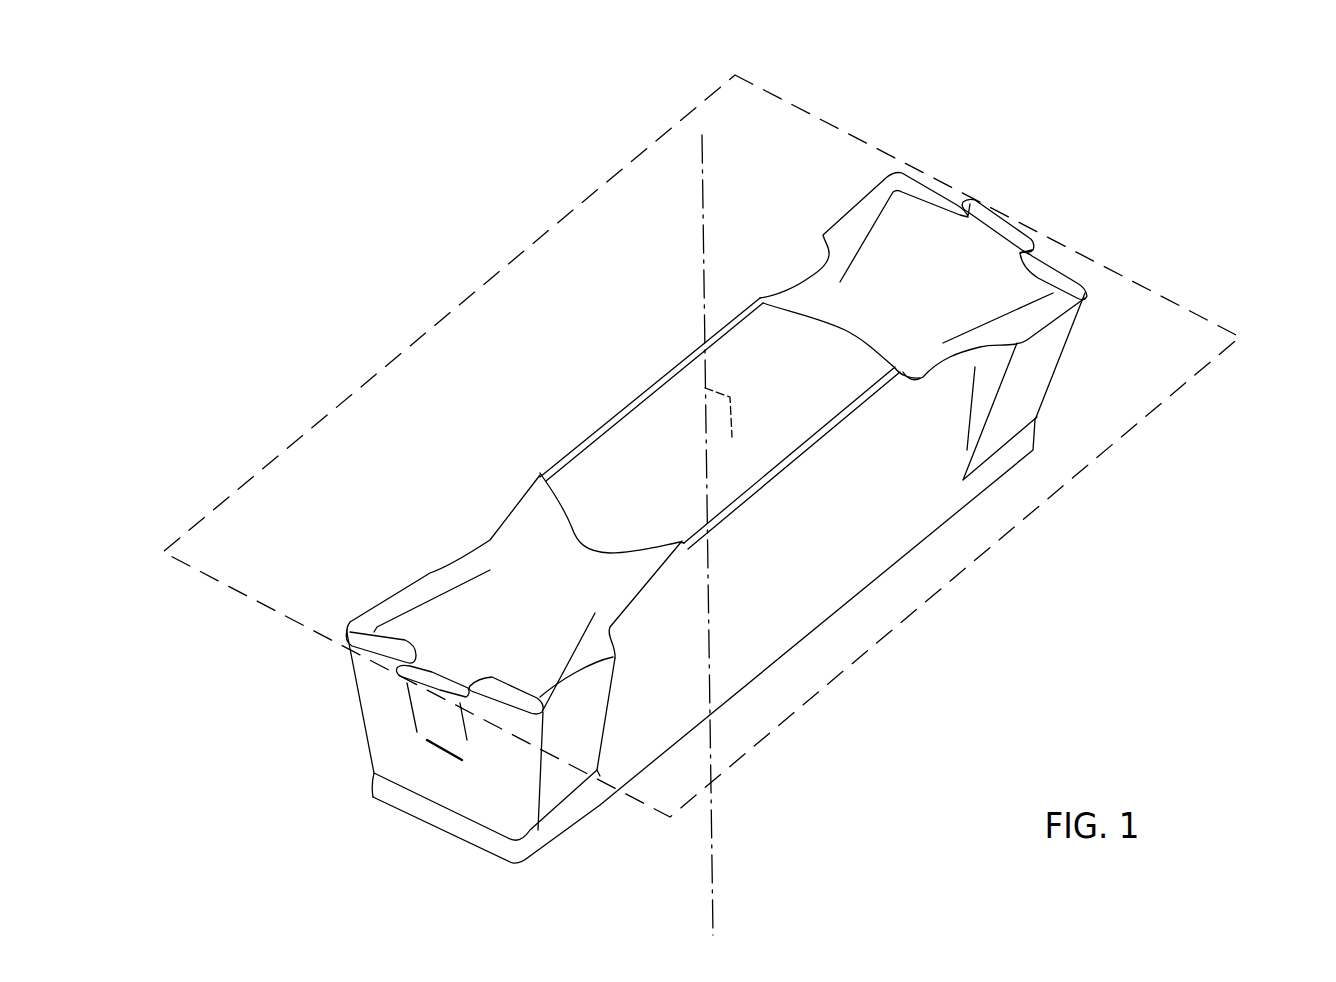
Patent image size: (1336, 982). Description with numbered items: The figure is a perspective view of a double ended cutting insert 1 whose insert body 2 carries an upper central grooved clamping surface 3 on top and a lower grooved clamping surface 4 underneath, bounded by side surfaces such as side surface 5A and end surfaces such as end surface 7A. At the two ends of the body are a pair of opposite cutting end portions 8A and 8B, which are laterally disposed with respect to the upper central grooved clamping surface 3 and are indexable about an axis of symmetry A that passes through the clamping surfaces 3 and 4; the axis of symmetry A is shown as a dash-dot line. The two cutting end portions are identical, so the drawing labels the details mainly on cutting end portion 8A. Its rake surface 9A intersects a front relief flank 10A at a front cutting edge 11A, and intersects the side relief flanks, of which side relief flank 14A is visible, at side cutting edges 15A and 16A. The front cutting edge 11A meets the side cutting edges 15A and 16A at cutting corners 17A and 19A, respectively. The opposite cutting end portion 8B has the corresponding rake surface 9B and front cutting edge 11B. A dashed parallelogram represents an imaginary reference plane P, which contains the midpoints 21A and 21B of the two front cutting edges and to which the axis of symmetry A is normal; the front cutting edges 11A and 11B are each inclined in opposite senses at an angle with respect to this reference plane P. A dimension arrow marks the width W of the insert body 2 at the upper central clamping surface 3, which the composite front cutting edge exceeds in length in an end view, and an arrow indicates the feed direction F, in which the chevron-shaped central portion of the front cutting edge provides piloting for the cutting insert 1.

The cutting insert 1 is at (785, 488).
The insert body 2 is at (846, 562).
The upper central grooved clamping surface 3 is at (687, 412).
The lower grooved clamping surface 4 is at (462, 832).
The side surface 5A is at (917, 494).
The end surface 7A is at (392, 760).
The cutting end portion 8A is at (569, 628).
The cutting end portion 8B is at (940, 212).
The rake surface 9A is at (490, 638).
The chip former 9B is at (900, 270).
The front relief flank 10A is at (373, 705).
The front cutting edge 11A is at (510, 710).
The front cutting edge 11B is at (1013, 217).
The side relief flank 14A is at (571, 736).
The side cutting edge 15A is at (387, 600).
The side cutting edge 16A is at (586, 665).
The cutting corner 17A is at (347, 637).
The cutting corner 19A is at (543, 713).
The midpoint 21A is at (395, 673).
The midpoint 21B is at (997, 212).
The imaginary reference plane P is at (554, 226).
The axis of symmetry A is at (704, 202).
The width W is at (592, 438).
The feed direction F is at (393, 853).